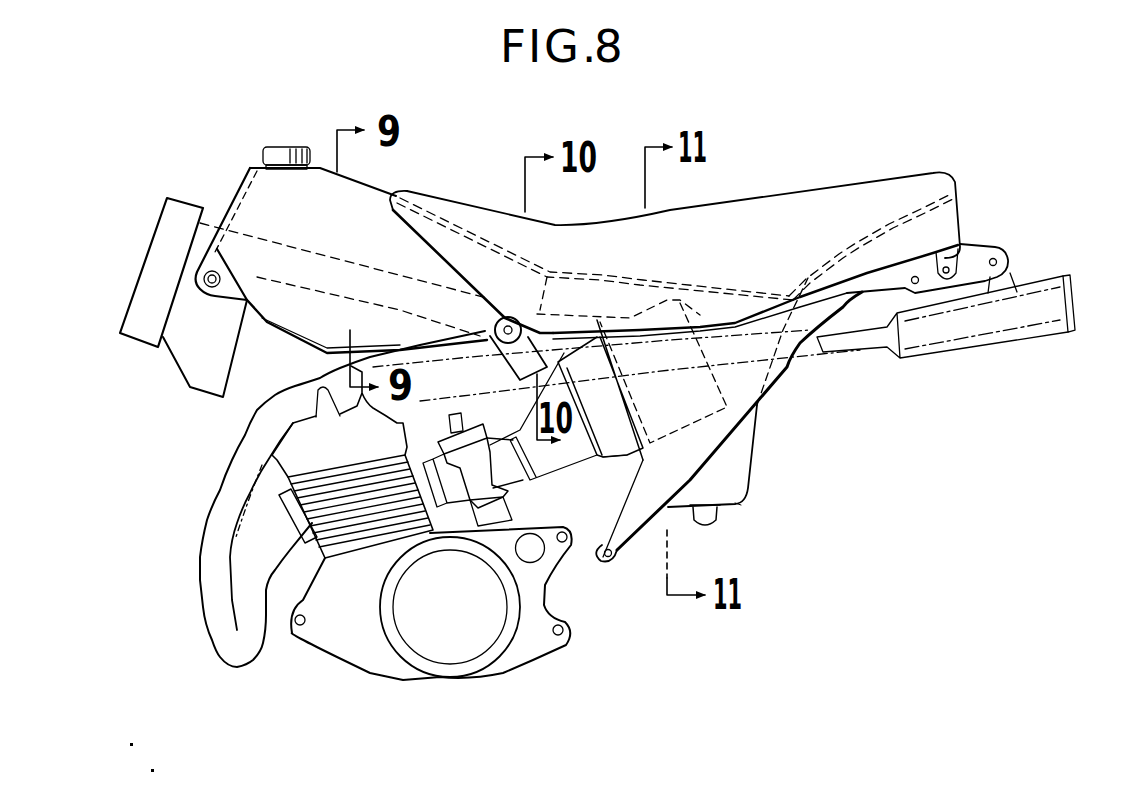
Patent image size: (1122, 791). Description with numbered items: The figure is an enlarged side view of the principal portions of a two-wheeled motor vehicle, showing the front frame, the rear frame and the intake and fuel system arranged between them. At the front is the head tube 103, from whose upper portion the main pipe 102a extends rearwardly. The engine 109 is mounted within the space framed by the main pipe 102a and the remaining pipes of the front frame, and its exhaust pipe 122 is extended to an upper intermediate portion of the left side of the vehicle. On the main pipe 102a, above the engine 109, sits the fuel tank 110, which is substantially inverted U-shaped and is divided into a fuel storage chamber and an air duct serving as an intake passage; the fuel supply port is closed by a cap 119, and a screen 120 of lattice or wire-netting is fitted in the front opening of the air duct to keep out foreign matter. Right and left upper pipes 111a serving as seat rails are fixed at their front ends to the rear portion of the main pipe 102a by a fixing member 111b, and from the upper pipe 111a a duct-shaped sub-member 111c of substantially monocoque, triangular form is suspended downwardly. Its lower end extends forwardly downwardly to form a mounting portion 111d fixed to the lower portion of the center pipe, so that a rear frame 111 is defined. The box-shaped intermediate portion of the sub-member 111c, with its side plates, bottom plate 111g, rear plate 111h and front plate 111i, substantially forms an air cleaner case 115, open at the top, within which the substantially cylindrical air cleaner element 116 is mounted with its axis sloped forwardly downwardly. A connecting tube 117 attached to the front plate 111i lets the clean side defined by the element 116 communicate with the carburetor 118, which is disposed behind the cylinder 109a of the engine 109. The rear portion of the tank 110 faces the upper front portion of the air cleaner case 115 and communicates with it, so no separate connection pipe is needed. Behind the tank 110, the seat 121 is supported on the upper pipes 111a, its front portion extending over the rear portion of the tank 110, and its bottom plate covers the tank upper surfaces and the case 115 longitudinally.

The head tube 103 is at (147, 297).
The fuel tank 110 is at (366, 209).
The screen 120 is at (244, 186).
The cap 119 is at (290, 148).
The seat 121 is at (675, 226).
The main pipe 102a is at (400, 273).
The rear frame 111 is at (778, 382).
The upper pipes 111a is at (867, 290).
The fixing member 111b is at (512, 328).
The sub-member 111c is at (750, 420).
The mounting portion 111d is at (637, 532).
The rear plate 111h is at (749, 482).
The bottom plate 111g is at (730, 505).
The air cleaner case 115 is at (694, 513).
The air cleaner element 116 is at (671, 421).
The connecting tube 117 is at (563, 476).
The front plate 111i is at (643, 454).
The carburetor 118 is at (464, 440).
The engine 109 is at (287, 494).
The cylinder 109a is at (360, 538).
The exhaust pipe 122 is at (228, 485).